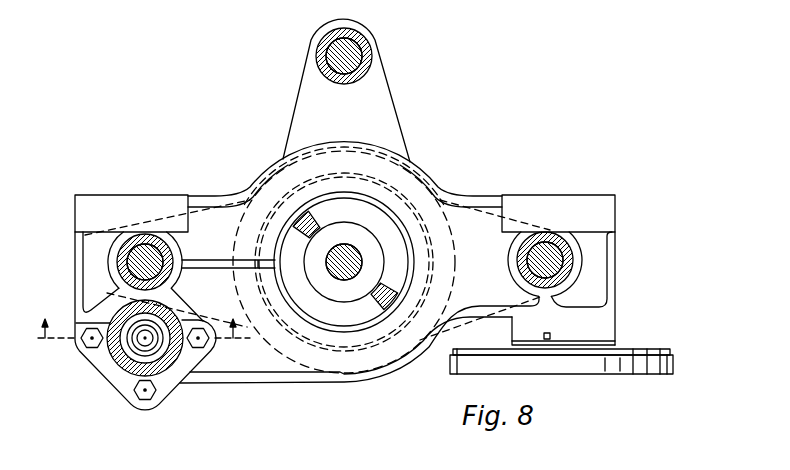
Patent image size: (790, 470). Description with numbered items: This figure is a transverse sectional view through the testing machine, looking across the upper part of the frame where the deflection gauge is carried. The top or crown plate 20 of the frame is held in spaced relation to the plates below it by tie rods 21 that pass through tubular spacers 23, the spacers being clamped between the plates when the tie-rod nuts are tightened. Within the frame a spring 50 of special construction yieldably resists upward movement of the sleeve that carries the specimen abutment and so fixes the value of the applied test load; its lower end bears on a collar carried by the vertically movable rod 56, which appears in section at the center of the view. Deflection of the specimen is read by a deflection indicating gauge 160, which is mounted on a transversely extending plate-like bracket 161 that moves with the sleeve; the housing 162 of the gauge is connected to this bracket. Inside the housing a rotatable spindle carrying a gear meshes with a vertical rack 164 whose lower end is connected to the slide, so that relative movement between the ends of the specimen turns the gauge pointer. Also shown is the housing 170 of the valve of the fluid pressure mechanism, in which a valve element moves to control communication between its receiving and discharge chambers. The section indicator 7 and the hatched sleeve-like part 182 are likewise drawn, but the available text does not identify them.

The section line 7- 7 is at (144, 341).
The crown plate 20 is at (305, 101).
The tie rods 21 is at (355, 48).
The tubular spacers 23 is at (318, 60).
The spring 50 is at (398, 283).
The vertically movable rod 56 is at (352, 256).
The deflection indicating gauge 160 is at (675, 366).
The plate-like bracket 161 is at (612, 273).
The housing 162 is at (610, 329).
The vertical rack 164 is at (544, 336).
The valve housing 170 is at (158, 366).
The bushing sleeve 182 is at (125, 362).